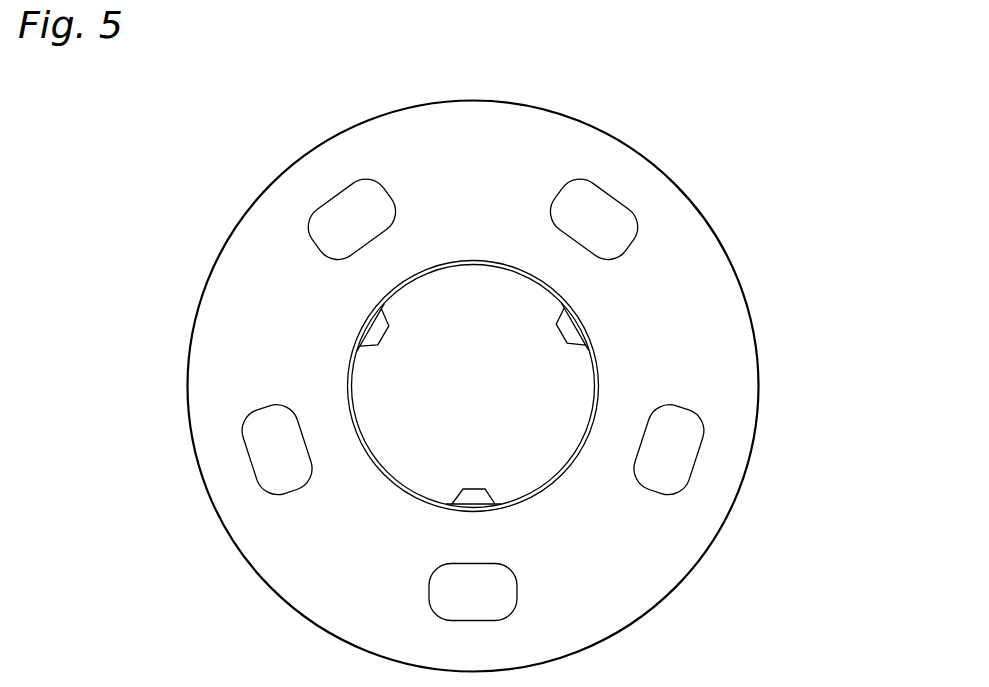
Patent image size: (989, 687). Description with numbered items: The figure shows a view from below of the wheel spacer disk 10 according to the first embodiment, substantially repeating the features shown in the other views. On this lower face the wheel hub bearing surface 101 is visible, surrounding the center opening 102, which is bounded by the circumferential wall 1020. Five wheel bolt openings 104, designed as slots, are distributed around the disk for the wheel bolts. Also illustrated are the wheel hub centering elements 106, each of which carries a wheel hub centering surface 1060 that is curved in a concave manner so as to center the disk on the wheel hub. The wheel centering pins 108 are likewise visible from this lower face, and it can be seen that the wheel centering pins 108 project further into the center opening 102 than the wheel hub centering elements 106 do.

The wheel spacer disk 10 is at (439, 370).
The wheel hub bearing surface 101 is at (238, 287).
The center opening 102 is at (390, 437).
The circumferential wall 1020 is at (430, 278).
The wheel bolt openings 104 is at (268, 437).
The wheel hub centering elements 106 is at (473, 403).
The wheel hub centering surface 1060 is at (376, 330).
The wheel centering pins 108 is at (568, 358).